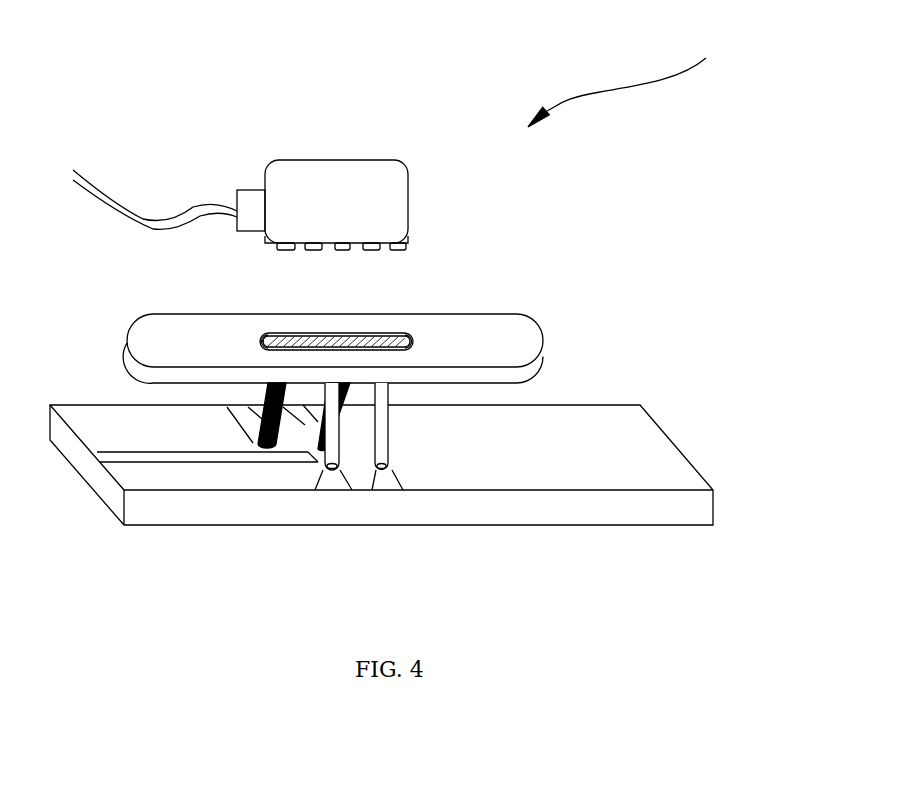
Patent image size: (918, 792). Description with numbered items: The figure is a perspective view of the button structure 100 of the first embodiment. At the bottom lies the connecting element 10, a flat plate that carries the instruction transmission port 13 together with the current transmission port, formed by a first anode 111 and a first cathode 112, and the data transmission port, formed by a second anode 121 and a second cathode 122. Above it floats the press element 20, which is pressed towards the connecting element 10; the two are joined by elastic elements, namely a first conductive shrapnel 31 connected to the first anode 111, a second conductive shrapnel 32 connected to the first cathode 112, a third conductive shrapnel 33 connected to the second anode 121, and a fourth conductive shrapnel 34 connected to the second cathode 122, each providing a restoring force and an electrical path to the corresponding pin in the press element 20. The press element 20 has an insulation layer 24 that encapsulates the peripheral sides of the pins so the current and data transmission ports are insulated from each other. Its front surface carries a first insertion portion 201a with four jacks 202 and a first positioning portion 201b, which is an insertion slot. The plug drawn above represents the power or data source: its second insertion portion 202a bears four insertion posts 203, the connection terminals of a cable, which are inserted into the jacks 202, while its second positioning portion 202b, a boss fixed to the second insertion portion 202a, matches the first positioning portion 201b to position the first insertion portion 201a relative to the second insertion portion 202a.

The button structure 100 is at (642, 84).
The connecting element 10 is at (604, 476).
The instruction transmission port 13 is at (298, 460).
The first anode 111 is at (252, 442).
The first cathode 112 is at (322, 471).
The second anode 121 is at (320, 446).
The second cathode 122 is at (368, 473).
The press element 20 is at (416, 343).
The insulation layer 24 is at (262, 342).
The first insertion portion 201a is at (270, 333).
The first positioning portion 201b is at (400, 333).
The jacks 202 is at (312, 334).
The second insertion portion 202a is at (270, 243).
The second positioning portion 202b is at (404, 248).
The insertion posts 203 is at (326, 252).
The first conductive shrapnel 31 is at (262, 404).
The second conductive shrapnel 32 is at (340, 420).
The third conductive shrapnel 33 is at (348, 390).
The fourth conductive shrapnel 34 is at (388, 420).